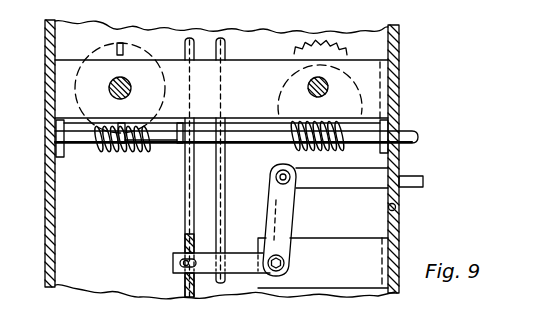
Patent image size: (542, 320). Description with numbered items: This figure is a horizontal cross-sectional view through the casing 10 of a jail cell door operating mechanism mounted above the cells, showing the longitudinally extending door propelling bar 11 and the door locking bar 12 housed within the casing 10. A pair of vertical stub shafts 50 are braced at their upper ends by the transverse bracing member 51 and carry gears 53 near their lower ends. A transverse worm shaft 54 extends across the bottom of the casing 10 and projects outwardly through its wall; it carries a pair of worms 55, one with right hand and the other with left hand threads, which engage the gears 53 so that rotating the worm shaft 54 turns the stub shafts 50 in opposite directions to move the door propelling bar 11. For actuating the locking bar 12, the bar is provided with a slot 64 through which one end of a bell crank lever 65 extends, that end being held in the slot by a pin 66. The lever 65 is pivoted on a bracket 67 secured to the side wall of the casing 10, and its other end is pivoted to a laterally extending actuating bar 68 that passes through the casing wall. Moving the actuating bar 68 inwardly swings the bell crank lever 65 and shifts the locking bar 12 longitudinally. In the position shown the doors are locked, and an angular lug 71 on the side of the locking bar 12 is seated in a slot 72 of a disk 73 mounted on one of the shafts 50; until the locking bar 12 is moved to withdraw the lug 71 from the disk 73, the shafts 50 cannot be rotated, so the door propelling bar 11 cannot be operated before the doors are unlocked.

The casing 10 is at (396, 208).
The door propelling bar 11 is at (227, 170).
The door locking bar 12 is at (187, 180).
The stub shaft 50 is at (327, 82).
The transverse bracing member 51 is at (363, 96).
The gear 53 is at (321, 45).
The worm shaft 54 is at (402, 130).
The worm 55 is at (283, 118).
The slot 64 is at (186, 243).
The bell crank lever 65 is at (208, 268).
The pin 66 is at (175, 267).
The bracket 67 is at (331, 268).
The actuating bar 68 is at (410, 176).
The angular lug 71 is at (150, 155).
The slot 72 is at (93, 152).
The disk 73 is at (131, 50).